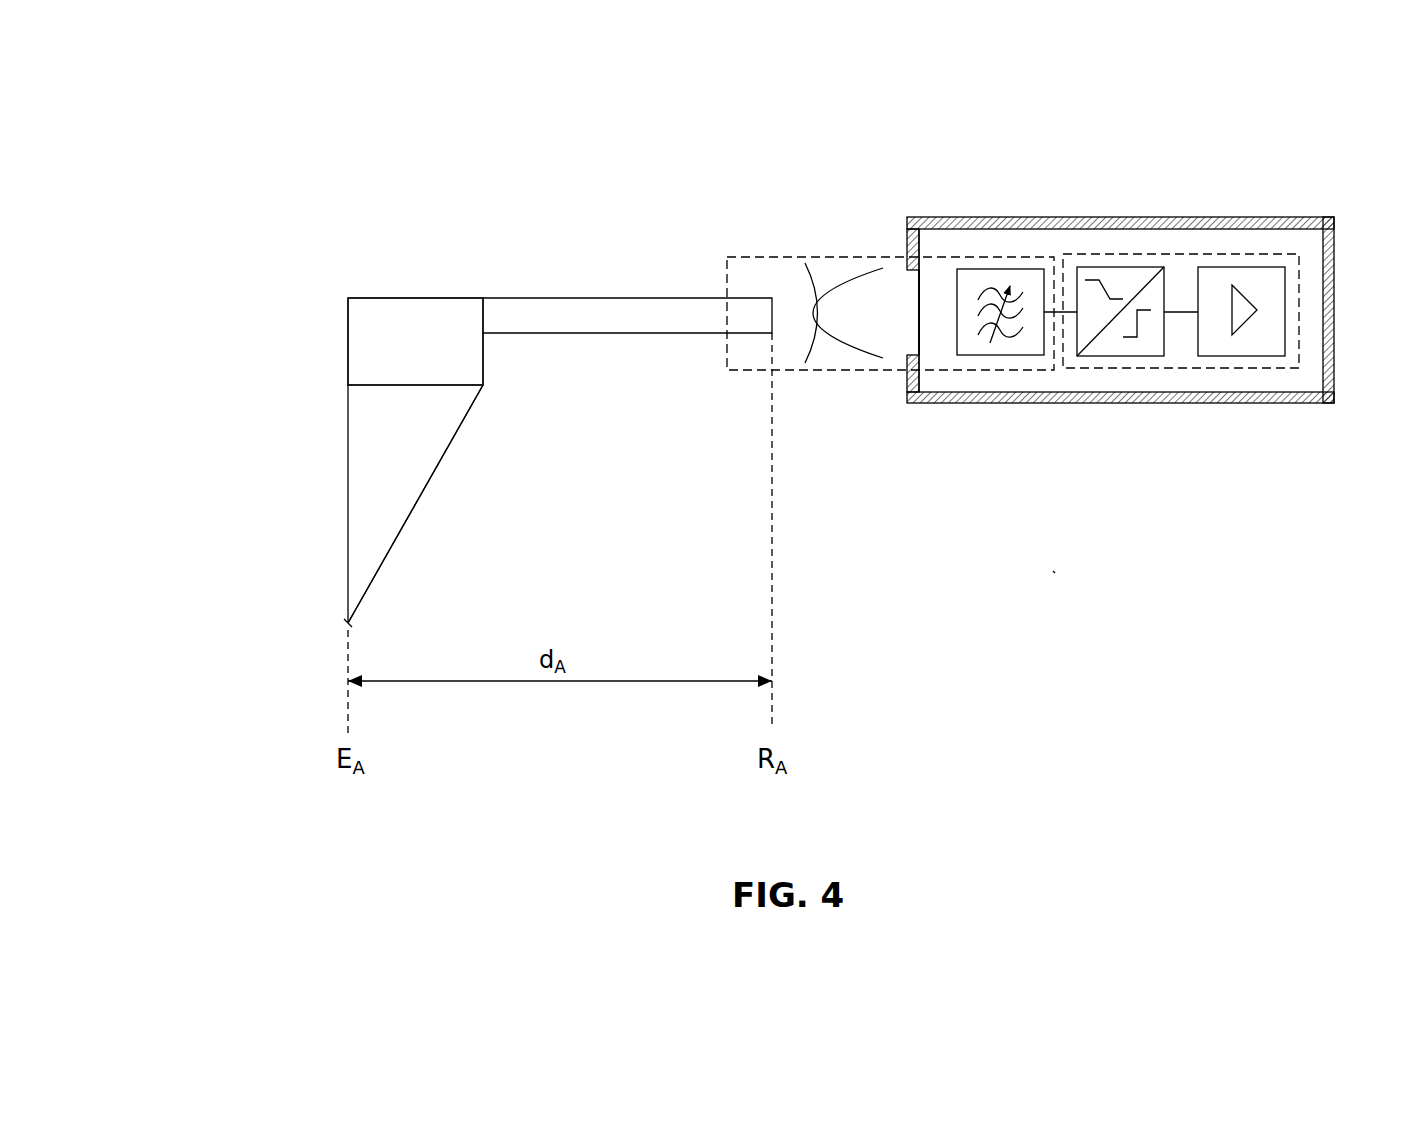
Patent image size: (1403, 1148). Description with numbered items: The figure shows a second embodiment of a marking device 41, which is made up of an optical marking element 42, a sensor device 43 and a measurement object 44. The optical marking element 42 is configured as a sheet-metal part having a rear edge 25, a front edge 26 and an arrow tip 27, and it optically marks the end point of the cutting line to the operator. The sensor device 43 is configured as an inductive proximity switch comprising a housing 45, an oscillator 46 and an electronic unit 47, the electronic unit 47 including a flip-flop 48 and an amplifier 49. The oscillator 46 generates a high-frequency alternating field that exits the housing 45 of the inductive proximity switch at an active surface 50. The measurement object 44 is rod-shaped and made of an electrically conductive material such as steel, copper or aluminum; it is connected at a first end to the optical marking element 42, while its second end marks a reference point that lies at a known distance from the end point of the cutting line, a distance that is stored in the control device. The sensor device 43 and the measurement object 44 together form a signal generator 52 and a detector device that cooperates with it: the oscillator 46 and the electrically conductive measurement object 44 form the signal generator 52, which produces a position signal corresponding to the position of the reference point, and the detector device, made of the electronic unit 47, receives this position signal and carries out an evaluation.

The rear edge 25 is at (345, 490).
The front edge 26 is at (424, 495).
The arrow tip 27 is at (346, 629).
The marking device 41 is at (1055, 573).
The optical marking element 42 is at (418, 283).
The sensor device 43 is at (1085, 262).
The measurement object 44 is at (613, 313).
The housing 45 is at (1313, 217).
The oscillator 46 is at (1000, 269).
The electronic unit 47 is at (1177, 254).
The flip-flop 48 is at (1118, 356).
The amplifier 49 is at (1240, 356).
The active surface 50 is at (912, 290).
The signal generator 52 is at (838, 371).